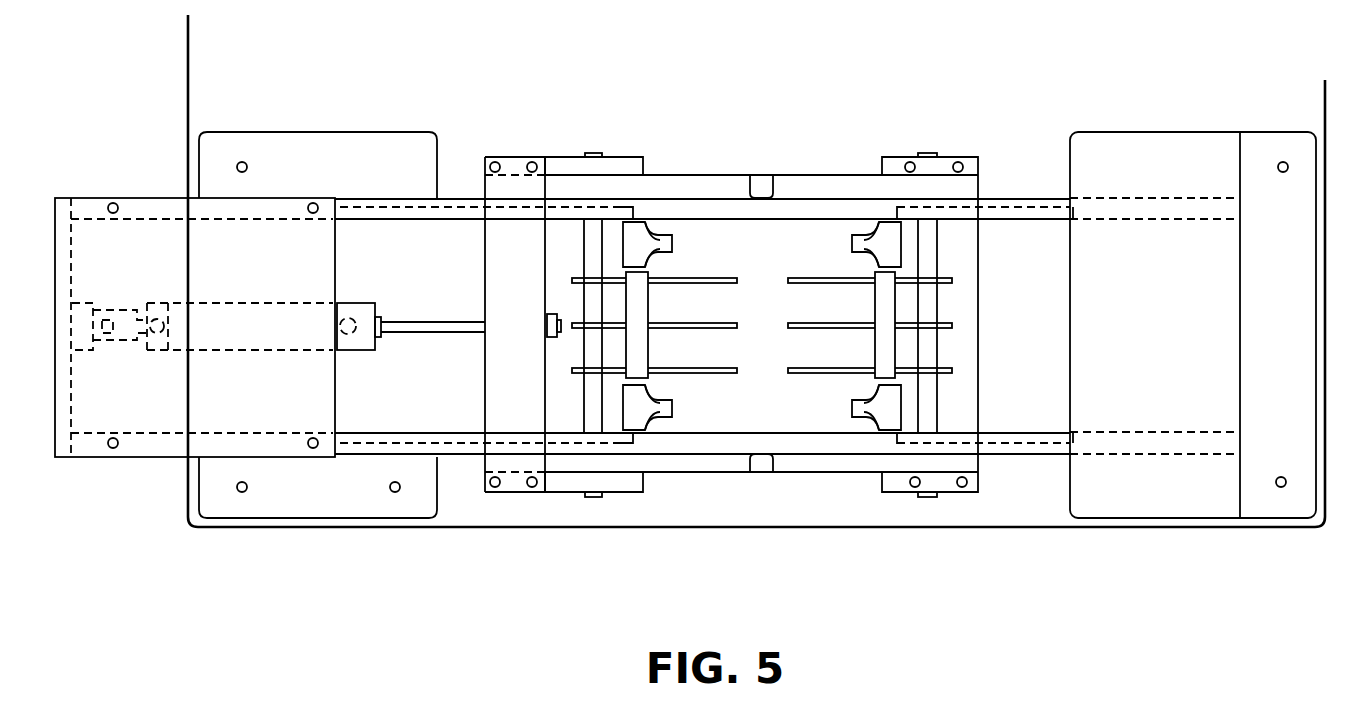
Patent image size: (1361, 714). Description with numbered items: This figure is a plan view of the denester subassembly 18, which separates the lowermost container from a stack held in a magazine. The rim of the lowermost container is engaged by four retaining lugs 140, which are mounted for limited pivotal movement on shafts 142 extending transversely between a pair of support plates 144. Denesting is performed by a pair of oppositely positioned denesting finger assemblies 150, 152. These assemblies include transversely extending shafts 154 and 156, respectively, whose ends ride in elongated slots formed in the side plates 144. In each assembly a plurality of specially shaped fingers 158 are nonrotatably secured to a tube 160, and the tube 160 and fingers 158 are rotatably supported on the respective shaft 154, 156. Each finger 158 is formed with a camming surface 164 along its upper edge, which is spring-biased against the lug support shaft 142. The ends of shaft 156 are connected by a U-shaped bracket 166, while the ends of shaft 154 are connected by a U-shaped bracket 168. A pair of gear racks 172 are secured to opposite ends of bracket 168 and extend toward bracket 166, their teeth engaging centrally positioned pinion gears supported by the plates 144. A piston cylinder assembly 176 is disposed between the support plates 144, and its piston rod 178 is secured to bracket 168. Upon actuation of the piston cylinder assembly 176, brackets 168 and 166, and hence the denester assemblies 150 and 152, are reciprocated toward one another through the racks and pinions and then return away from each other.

The denester subassembly 18 is at (496, 88).
The retaining lugs 140 is at (647, 240).
The shafts 142 is at (647, 275).
The support plates 144 is at (1015, 198).
The denesting finger assembly 150 is at (761, 283).
The denesting finger assembly 152 is at (1026, 339).
The shaft 154 is at (593, 497).
The shaft 156 is at (927, 497).
The fingers 158 is at (790, 362).
The tube 160 is at (590, 345).
The camming surface 164 is at (705, 277).
The U-shaped bracket 166 is at (951, 154).
The U-shaped bracket 168 is at (520, 160).
The gear racks 172 is at (655, 178).
The piston cylinder assembly 176 is at (250, 296).
The piston rod 178 is at (418, 327).